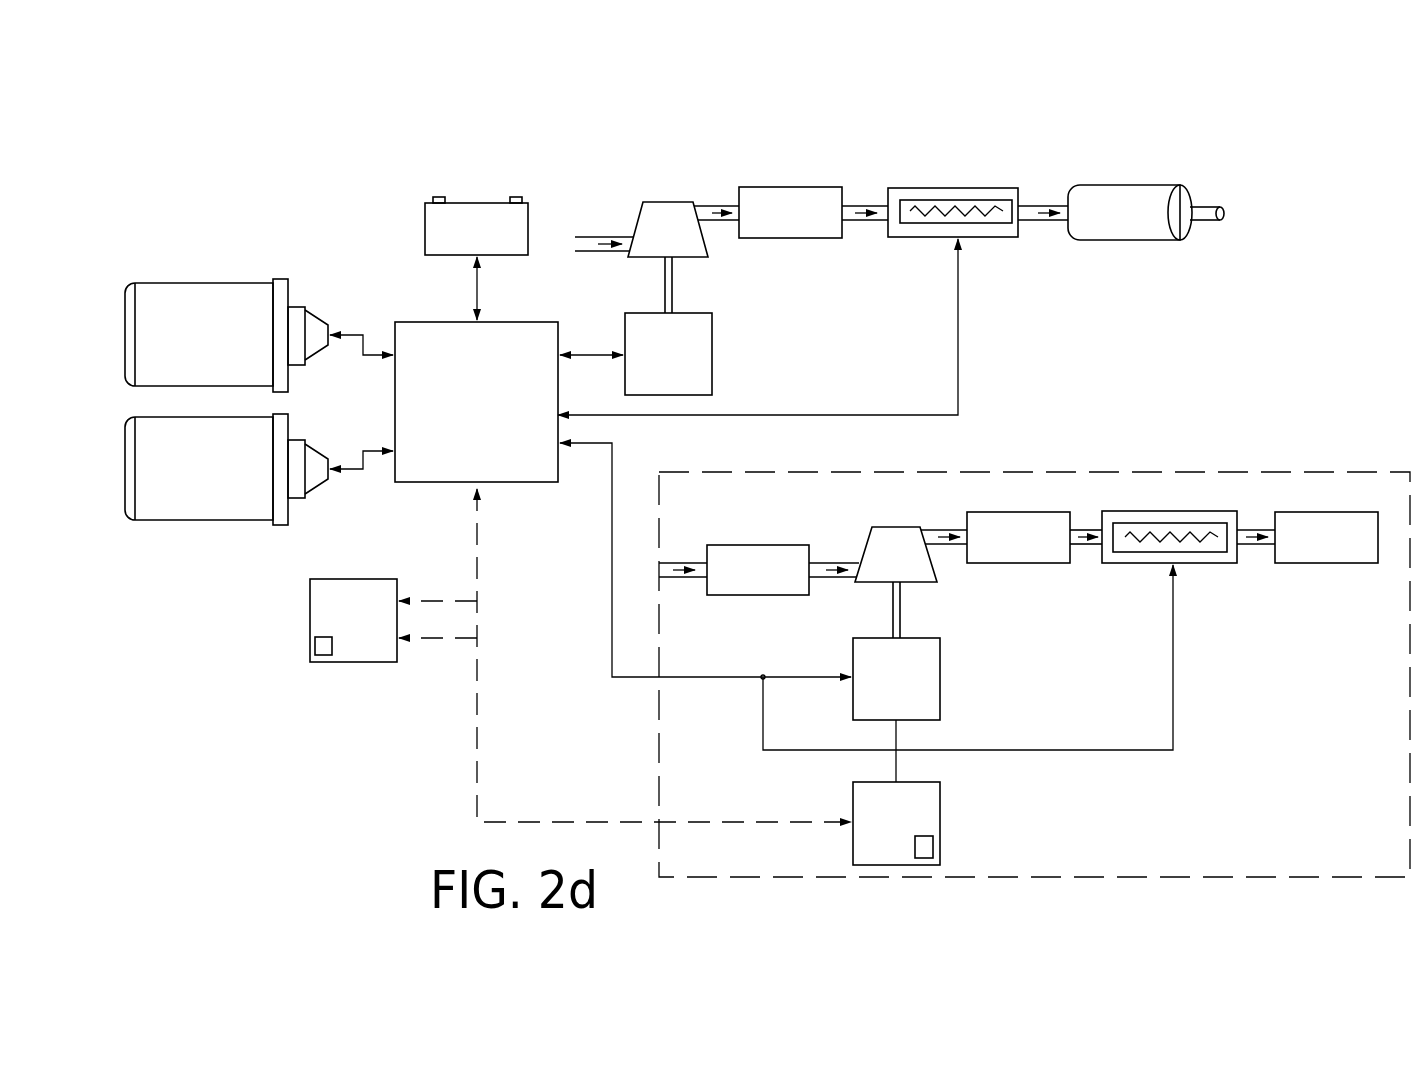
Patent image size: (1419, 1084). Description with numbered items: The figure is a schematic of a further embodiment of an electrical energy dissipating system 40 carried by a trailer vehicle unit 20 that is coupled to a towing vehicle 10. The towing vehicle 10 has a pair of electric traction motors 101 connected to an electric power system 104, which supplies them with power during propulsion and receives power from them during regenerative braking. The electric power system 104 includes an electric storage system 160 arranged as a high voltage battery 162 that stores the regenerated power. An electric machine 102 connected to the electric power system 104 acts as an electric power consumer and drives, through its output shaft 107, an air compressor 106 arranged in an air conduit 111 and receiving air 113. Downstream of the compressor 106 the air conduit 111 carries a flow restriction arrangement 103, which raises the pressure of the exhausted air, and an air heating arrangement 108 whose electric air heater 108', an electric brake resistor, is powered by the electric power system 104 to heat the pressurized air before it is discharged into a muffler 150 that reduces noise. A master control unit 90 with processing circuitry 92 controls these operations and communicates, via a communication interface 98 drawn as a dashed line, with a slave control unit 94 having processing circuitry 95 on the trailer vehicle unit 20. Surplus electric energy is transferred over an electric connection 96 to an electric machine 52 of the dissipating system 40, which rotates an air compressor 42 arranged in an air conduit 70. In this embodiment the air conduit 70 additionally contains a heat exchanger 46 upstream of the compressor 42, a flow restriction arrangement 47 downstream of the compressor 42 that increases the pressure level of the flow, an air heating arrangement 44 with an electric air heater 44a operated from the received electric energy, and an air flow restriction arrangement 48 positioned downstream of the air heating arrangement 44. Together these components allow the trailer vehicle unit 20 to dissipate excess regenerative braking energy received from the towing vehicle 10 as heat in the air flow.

The towing vehicle 10 is at (322, 138).
The trailer vehicle unit 20 is at (1296, 392).
The electrical energy dissipating system 40 is at (704, 769).
The air compressor 42 is at (907, 527).
The air heating arrangement 44 is at (1157, 511).
The electric air heater 44a is at (1210, 523).
The heat exchanger 46 is at (762, 545).
The flow restriction arrangement 47 is at (1020, 512).
The air flow restriction arrangement 48 is at (1333, 512).
The electric machine 52 is at (942, 708).
The air conduit 70 is at (690, 563).
The master control unit 90 is at (310, 618).
The processing circuitry 92 is at (315, 647).
The slave control unit 94 is at (942, 823).
The processing circuitry 95 is at (935, 850).
The electric connection 96 is at (610, 580).
The communication interface 98 is at (477, 715).
The electric traction motor 101 is at (197, 282).
The electric machine 102 is at (713, 355).
The flow restriction arrangement 103 is at (785, 187).
The electric power system 104 is at (522, 484).
The air compressor 106 is at (663, 202).
The output shaft 107 is at (675, 285).
The air heating arrangement 108 is at (788, 263).
The electric air heater 108' is at (939, 251).
The air conduit 111 is at (612, 236).
The air 113 is at (598, 236).
The muffler 150 is at (1127, 185).
The electric storage system 160 is at (461, 203).
The battery 162 is at (498, 230).